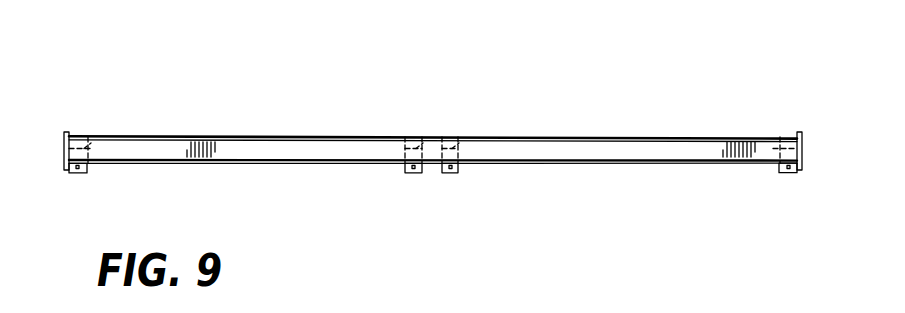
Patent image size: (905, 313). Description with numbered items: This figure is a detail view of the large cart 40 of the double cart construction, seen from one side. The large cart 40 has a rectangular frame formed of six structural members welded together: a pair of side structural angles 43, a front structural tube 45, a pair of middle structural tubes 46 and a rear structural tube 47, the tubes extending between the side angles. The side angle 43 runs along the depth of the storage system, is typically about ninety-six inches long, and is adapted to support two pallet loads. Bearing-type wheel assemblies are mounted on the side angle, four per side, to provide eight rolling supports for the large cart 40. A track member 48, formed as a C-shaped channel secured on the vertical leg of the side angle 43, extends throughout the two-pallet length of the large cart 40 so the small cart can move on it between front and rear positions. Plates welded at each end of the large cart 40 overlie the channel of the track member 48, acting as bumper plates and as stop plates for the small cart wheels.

The large cart 40 is at (330, 120).
The side structural angle 43 is at (232, 138).
The front structural tube 45 is at (783, 147).
The middle structural tube 46 is at (458, 148).
The rear structural tube 47 is at (89, 143).
The track member 48 is at (634, 150).